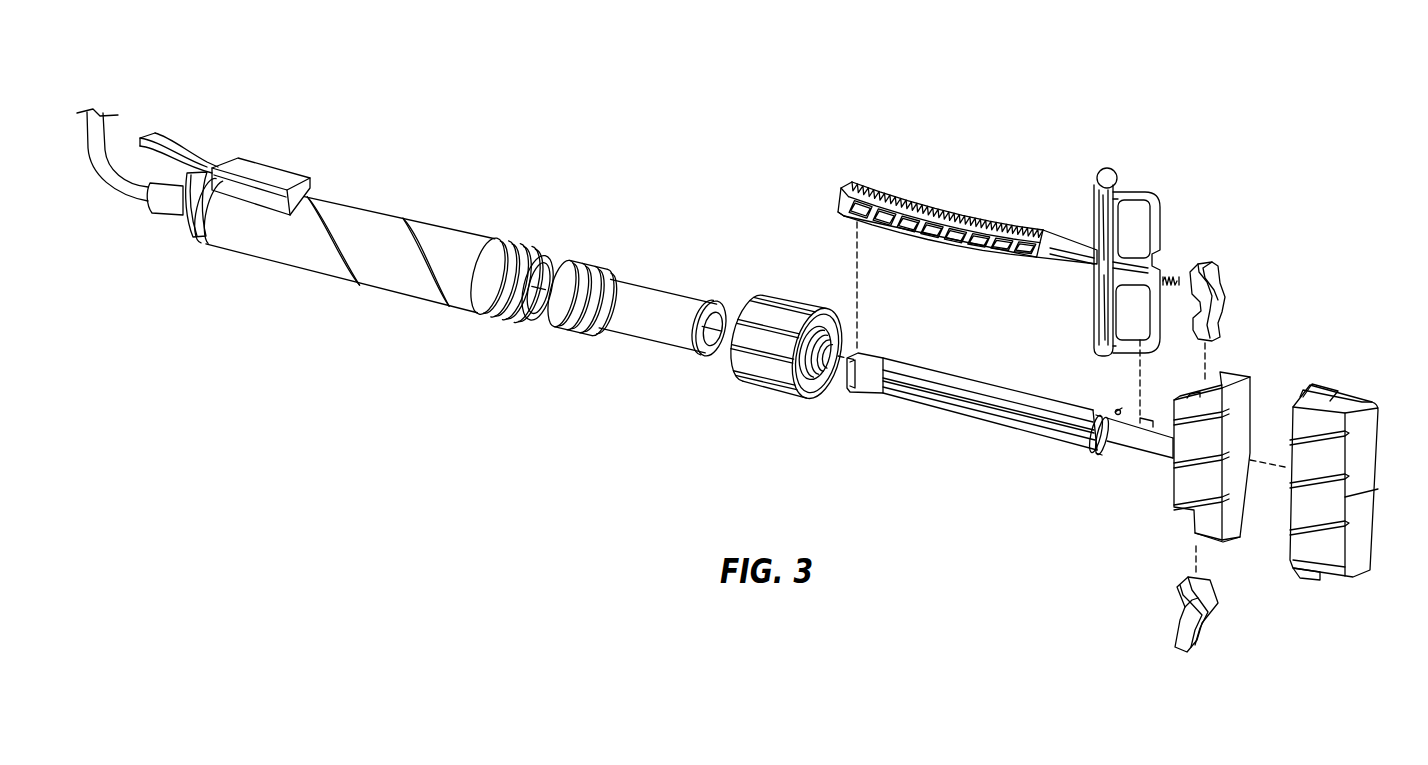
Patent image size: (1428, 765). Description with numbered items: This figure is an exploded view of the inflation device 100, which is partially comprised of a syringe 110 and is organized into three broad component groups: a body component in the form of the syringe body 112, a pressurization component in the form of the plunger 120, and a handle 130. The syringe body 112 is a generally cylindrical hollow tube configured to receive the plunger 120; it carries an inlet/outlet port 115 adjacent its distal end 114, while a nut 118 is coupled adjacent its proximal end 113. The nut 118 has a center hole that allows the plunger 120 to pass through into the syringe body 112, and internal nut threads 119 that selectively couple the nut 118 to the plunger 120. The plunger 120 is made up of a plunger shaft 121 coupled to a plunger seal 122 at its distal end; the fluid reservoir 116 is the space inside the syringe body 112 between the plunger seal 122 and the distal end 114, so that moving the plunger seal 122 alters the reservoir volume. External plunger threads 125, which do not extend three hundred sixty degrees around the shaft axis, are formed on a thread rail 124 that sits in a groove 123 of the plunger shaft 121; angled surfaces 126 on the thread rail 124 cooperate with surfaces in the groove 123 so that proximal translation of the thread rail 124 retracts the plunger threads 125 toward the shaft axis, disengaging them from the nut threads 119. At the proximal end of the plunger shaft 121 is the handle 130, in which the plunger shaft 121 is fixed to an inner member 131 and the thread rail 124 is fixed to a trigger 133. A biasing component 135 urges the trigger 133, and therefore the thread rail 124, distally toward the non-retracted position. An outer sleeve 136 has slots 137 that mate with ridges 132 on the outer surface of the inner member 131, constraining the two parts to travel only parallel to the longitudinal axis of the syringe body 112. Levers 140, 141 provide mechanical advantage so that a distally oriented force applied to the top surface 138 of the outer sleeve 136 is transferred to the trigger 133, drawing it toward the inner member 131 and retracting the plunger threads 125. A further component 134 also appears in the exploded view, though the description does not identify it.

The inflation device 100 is at (728, 143).
The syringe 110 is at (438, 188).
The syringe body 112 is at (368, 268).
The proximal end 113 is at (540, 330).
The distal end 114 is at (198, 238).
The inlet/outlet port 115 is at (187, 190).
The fluid reservoir 116 is at (543, 277).
The nut 118 is at (755, 385).
The nut threads 119 is at (820, 328).
The plunger 120 is at (645, 345).
The plunger shaft 121 is at (998, 375).
The plunger seal 122 is at (605, 280).
The groove 123 is at (1122, 408).
The thread rail 124 is at (940, 205).
The plunger threads 125 is at (900, 190).
The angled surfaces 126 is at (905, 230).
The handle 130 is at (1003, 133).
The inner member 131 is at (1240, 522).
The ridges 132 is at (1173, 458).
The trigger 133 is at (1097, 180).
The frame 134 is at (1165, 233).
The biasing component 135 is at (1178, 277).
The outer sleeve 136 is at (1355, 405).
The slots 137 is at (1370, 520).
The top surface 138 is at (1380, 528).
The lever 140 is at (1228, 290).
The lever 141 is at (1205, 625).